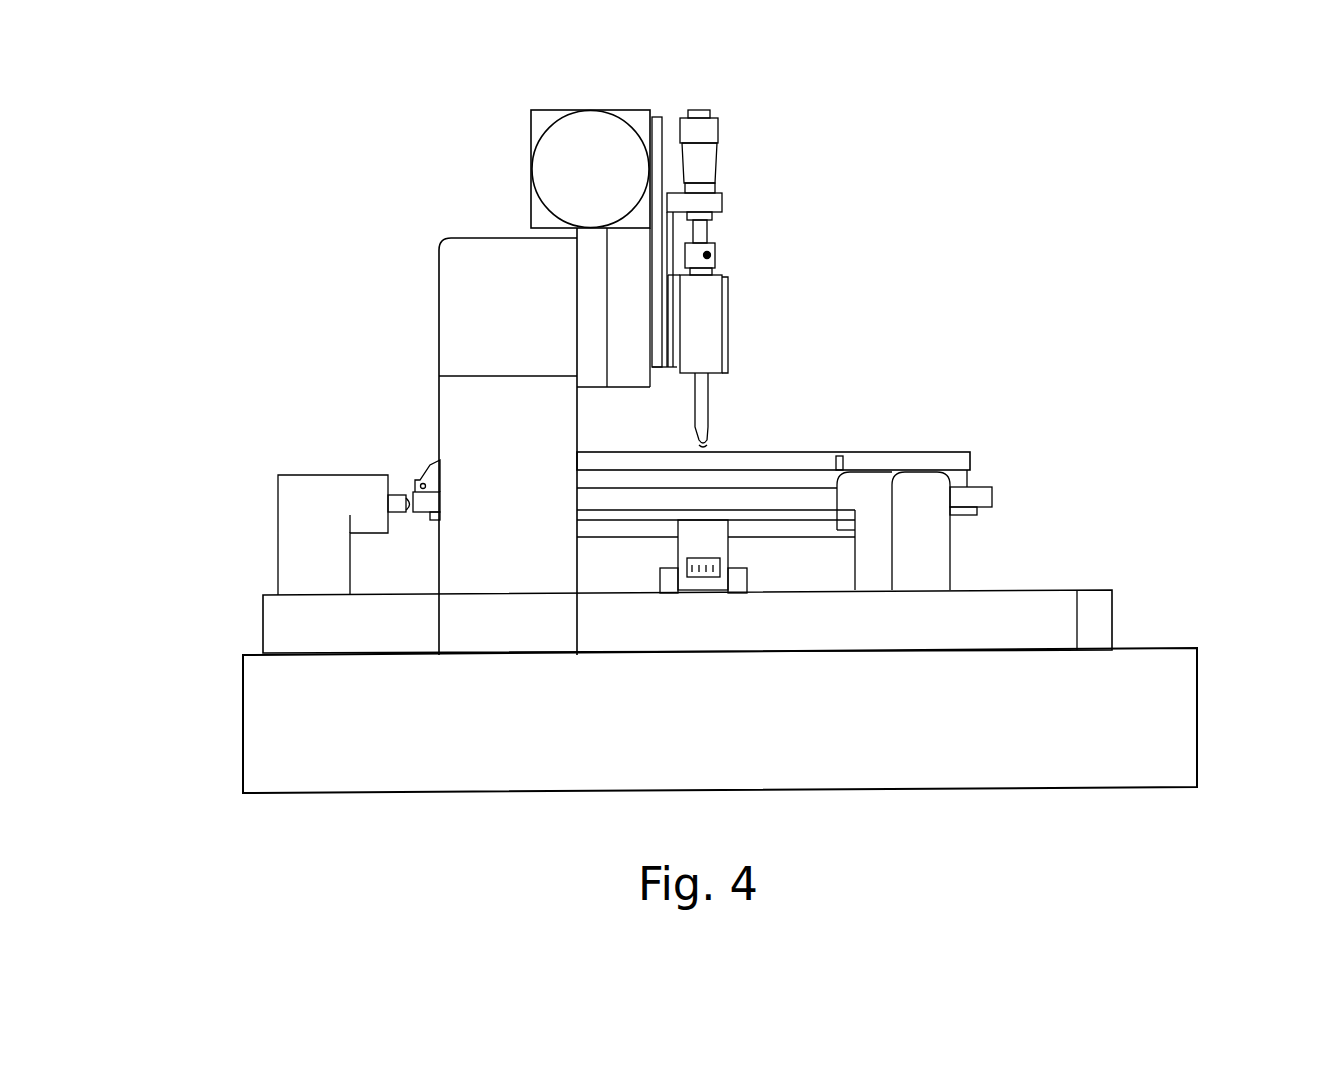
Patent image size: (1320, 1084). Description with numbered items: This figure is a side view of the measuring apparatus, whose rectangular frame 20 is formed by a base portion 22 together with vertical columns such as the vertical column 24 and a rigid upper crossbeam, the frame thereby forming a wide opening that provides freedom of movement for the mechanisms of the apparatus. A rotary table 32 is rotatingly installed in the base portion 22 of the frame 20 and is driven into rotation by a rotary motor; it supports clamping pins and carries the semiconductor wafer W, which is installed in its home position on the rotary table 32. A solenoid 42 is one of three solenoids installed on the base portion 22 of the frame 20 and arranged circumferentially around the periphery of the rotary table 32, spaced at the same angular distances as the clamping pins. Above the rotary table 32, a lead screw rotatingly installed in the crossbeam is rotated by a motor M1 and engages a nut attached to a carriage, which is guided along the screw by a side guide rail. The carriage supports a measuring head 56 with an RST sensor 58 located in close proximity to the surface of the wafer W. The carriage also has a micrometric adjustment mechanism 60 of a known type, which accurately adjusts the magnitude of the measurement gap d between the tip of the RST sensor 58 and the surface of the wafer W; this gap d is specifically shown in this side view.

The rectangular frame 20 is at (371, 294).
The base portion 22 is at (1182, 662).
The vertical column 24 is at (492, 426).
The rotary table 32 is at (1020, 473).
The solenoid 42 is at (280, 534).
The measuring head 56 is at (733, 325).
The RST sensor 58 is at (710, 405).
The micrometric adjustment mechanism 60 is at (717, 238).
The measurement gap d is at (707, 448).
The semiconductor wafer W is at (938, 452).
The motor M1 is at (600, 158).